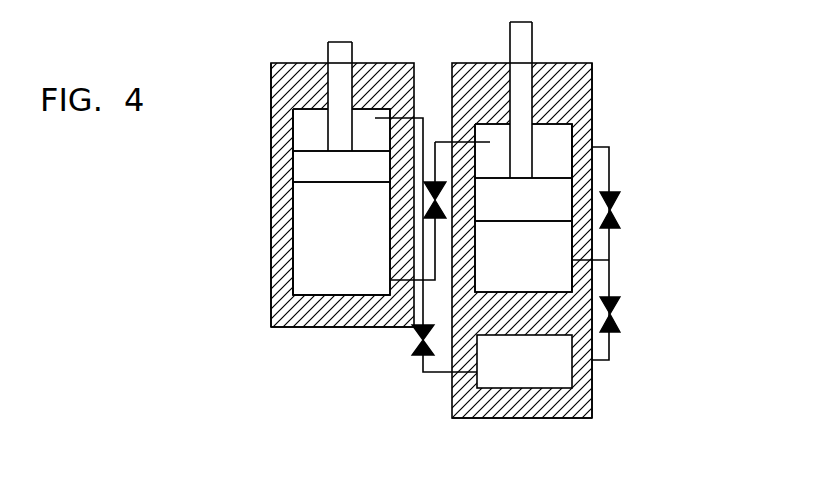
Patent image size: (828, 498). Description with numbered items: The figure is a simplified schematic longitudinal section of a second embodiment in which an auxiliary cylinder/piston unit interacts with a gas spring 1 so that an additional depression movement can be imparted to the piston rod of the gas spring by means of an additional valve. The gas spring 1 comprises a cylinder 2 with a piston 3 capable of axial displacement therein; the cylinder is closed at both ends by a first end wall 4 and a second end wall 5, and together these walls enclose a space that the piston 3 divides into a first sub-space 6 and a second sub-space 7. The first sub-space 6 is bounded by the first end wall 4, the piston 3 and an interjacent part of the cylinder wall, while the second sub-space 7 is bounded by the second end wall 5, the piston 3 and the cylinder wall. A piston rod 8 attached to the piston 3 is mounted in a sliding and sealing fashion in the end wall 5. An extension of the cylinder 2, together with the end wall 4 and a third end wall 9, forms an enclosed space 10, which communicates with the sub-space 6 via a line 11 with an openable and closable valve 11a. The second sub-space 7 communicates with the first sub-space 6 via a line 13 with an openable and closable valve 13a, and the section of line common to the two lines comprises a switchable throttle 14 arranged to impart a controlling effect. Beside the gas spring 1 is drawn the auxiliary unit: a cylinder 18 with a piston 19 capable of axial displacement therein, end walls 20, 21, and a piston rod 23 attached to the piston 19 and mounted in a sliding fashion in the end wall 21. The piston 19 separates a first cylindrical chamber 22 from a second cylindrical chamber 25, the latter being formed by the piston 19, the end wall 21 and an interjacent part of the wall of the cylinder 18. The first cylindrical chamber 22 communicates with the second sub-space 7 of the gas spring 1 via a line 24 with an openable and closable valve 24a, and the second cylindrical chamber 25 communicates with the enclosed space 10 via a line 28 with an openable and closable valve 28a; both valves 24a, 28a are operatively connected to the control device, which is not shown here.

The gas spring 1 is at (691, 36).
The cylinder 2 is at (587, 177).
The piston 3 is at (523, 199).
The first end wall 4 is at (618, 355).
The second end wall 5 is at (548, 240).
The first sub-space 6 is at (523, 256).
The second sub-space 7 is at (523, 151).
The piston rod 8 is at (538, 92).
The third end wall 9 is at (522, 432).
The enclosed space 10 is at (524, 361).
The line 11 is at (626, 339).
The valve 11a is at (634, 314).
The line 13 is at (637, 202).
The valve 13a is at (645, 206).
The switchable throttle 14 is at (636, 271).
The cylinder 18 is at (260, 195).
The piston 19 is at (341, 166).
The end wall 20 is at (342, 340).
The end wall 21 is at (336, 166).
The first cylindrical chamber 22 is at (341, 238).
The piston rod 23 is at (365, 77).
The line 24 is at (432, 213).
The valve 24a is at (442, 109).
The second cylindrical chamber 25 is at (341, 130).
The line 28 is at (446, 370).
The valve 28a is at (394, 348).